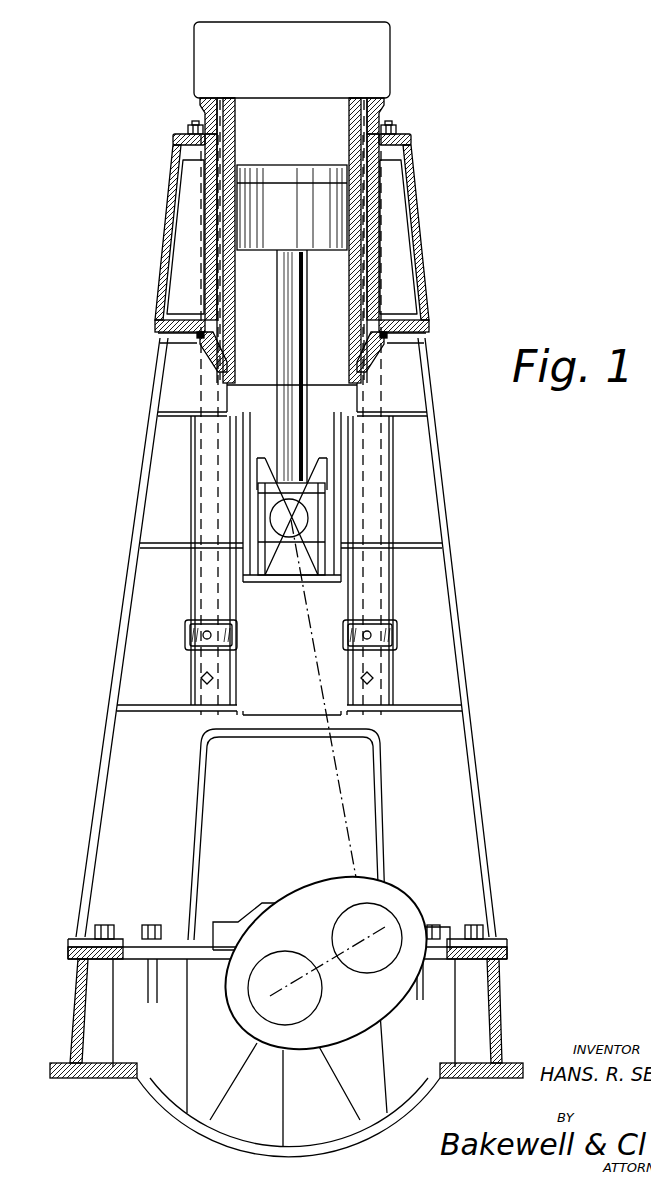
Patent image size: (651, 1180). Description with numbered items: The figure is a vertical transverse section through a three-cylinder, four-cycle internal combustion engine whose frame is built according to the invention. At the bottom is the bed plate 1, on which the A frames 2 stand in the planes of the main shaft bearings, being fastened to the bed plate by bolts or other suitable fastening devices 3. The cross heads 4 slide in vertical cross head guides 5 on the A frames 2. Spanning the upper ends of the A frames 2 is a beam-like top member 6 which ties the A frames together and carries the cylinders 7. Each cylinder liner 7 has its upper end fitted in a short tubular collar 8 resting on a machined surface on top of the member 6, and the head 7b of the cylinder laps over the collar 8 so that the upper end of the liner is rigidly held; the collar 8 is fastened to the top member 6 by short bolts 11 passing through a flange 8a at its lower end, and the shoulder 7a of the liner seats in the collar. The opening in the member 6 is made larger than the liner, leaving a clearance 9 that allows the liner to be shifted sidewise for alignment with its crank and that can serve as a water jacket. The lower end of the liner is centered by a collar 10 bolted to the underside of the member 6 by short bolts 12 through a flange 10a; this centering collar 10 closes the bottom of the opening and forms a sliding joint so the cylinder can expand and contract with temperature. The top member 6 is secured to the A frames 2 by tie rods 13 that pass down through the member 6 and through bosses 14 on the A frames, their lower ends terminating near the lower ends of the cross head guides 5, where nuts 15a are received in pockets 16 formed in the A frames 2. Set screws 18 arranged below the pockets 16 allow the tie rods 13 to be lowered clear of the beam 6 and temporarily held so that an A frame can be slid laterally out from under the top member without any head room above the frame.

The bed plate 1 is at (500, 993).
The A frames 2 is at (430, 778).
The bolts 3 is at (104, 925).
The cross heads 4 is at (287, 562).
The cross head guides 5 is at (245, 675).
The top member 6 is at (422, 260).
The cylinder liner 7 is at (357, 148).
The cylinder head shoulder 7a is at (224, 108).
The cylinder head 7b is at (233, 55).
The collar 8 is at (200, 110).
The flange 8a is at (433, 130).
The clearance 9 is at (365, 217).
The centering collar 10 is at (215, 352).
The flange 10a is at (458, 330).
The short bolts 11 is at (188, 130).
The short bolts 12 is at (200, 340).
The tie rods 13 is at (212, 477).
The bosses 14 is at (220, 585).
The nuts 15a is at (377, 635).
The pockets 16 is at (395, 653).
The set screws 18 is at (363, 682).